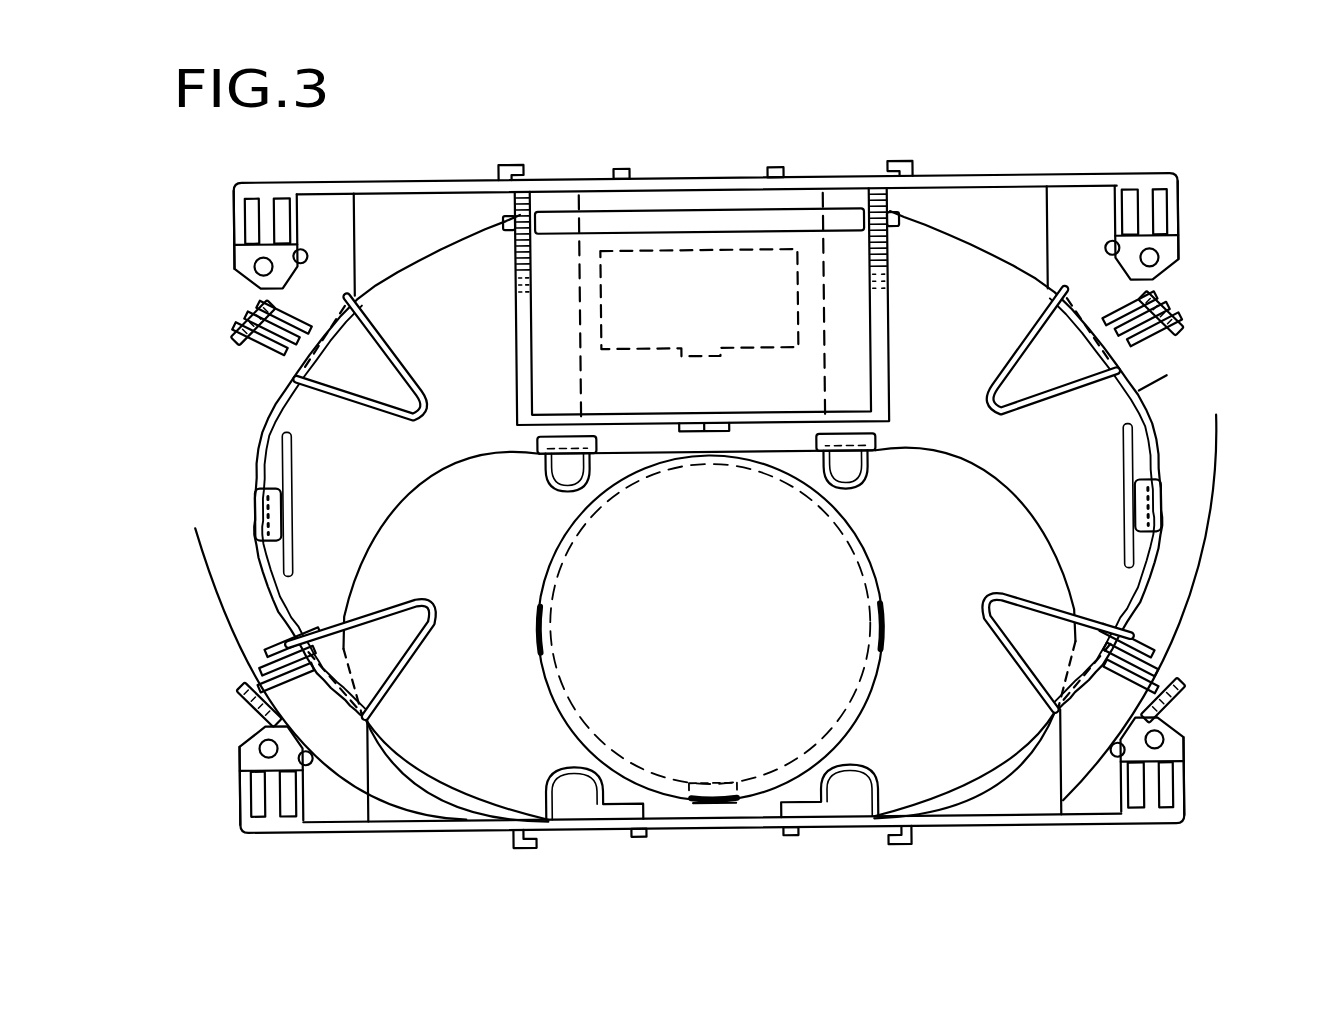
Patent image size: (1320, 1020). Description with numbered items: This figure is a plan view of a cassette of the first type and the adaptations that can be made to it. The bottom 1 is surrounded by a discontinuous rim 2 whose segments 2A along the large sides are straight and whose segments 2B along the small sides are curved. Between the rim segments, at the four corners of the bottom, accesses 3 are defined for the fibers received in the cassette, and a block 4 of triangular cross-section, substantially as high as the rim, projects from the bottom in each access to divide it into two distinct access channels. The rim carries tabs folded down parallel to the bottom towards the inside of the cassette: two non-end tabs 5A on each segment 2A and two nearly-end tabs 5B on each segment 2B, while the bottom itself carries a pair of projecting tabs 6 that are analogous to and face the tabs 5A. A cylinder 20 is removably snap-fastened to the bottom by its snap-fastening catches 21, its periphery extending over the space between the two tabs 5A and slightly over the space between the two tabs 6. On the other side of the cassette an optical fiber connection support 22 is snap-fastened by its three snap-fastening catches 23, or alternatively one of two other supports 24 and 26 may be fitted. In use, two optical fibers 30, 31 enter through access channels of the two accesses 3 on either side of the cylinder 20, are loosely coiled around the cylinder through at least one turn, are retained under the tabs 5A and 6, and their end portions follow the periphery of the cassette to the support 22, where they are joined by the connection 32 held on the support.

The bottom 1 is at (330, 490).
The rim 2 is at (460, 836).
The rim segments along the large sides 2A is at (972, 177).
The rim segments along the small sides 2B is at (1145, 397).
The access 3 is at (275, 643).
The block 4 is at (262, 740).
The non-end tabs 5A is at (572, 793).
The nearly-end tabs 5B is at (354, 372).
The projecting tabs 6 is at (562, 468).
The cylinder 20 is at (877, 565).
The snap-fastening catches 21 is at (734, 792).
The optical fiber connection support 22 is at (886, 345).
The snap-fastening catches 23 is at (707, 431).
The support 24 is at (826, 372).
The support 26 is at (802, 312).
The optical fiber 30 is at (206, 560).
The optical fiber 31 is at (1207, 543).
The connection 32 is at (683, 215).